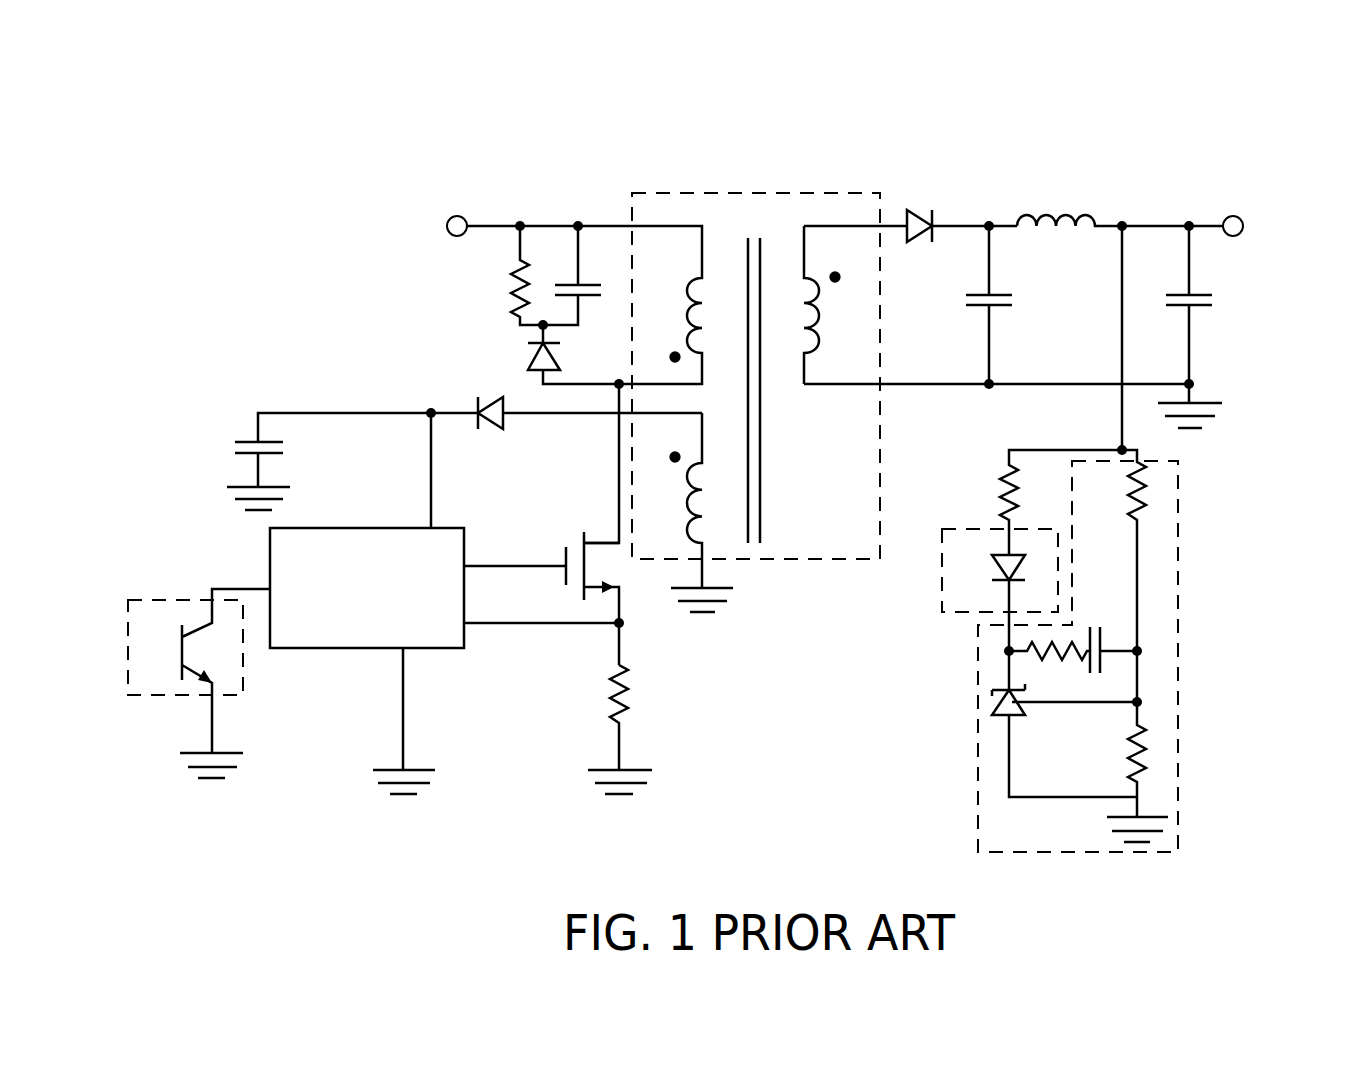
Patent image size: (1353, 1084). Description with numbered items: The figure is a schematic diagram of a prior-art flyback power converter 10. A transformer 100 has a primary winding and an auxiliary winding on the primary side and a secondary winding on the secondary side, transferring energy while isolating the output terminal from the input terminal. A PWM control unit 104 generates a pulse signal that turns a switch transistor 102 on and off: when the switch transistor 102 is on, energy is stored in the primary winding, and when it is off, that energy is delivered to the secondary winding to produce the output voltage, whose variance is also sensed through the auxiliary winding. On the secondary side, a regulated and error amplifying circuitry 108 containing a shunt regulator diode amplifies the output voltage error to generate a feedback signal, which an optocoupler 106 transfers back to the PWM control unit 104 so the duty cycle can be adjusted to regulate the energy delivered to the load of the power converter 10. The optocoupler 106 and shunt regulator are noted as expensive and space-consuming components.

The power converter 10 is at (1153, 145).
The transformer 100 is at (663, 190).
The switch transistor 102 is at (605, 532).
The pulse width modulation (PWM) control unit 104 is at (300, 528).
The optocoupler 106 is at (170, 634).
The regulated and error amplifying circuitry 108 is at (977, 697).